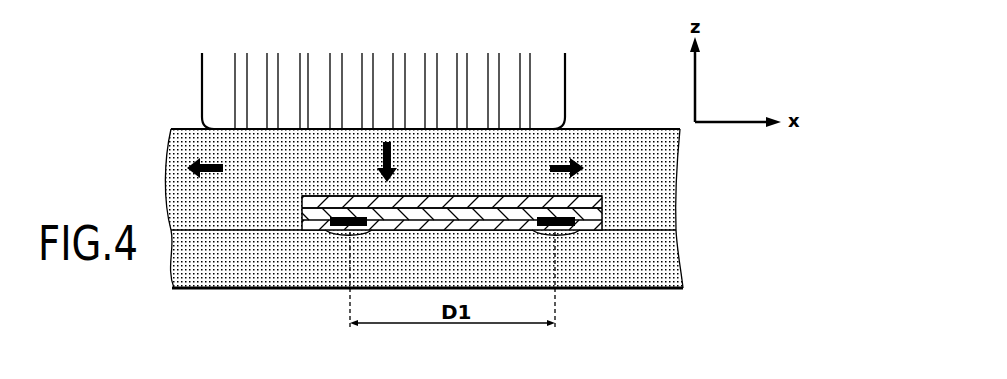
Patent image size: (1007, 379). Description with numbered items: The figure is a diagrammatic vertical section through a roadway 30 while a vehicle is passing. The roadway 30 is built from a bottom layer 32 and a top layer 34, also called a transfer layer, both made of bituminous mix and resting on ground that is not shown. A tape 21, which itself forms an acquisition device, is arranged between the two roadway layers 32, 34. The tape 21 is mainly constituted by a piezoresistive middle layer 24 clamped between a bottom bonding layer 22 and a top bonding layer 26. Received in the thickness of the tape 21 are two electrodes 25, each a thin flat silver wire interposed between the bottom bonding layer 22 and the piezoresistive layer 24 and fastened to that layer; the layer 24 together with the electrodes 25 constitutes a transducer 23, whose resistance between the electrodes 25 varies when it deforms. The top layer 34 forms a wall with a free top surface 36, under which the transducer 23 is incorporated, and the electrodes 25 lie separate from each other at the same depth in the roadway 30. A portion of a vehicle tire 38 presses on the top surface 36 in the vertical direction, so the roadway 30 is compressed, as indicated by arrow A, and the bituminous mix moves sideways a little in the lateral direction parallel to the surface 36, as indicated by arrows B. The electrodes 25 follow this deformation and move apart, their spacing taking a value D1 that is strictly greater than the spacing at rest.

The tape 21 is at (596, 186).
The bottom bonding layer 22 is at (328, 231).
The transducer 23 is at (570, 229).
The piezoresistive middle layer 24 is at (602, 209).
The electrodes 25 is at (380, 198).
The top bonding layer 26 is at (326, 206).
The roadway 30 is at (158, 152).
The bottom layer 32 is at (668, 260).
The top layer 34 is at (668, 160).
The top surface 36 is at (563, 129).
The vehicle tire 38 is at (552, 85).